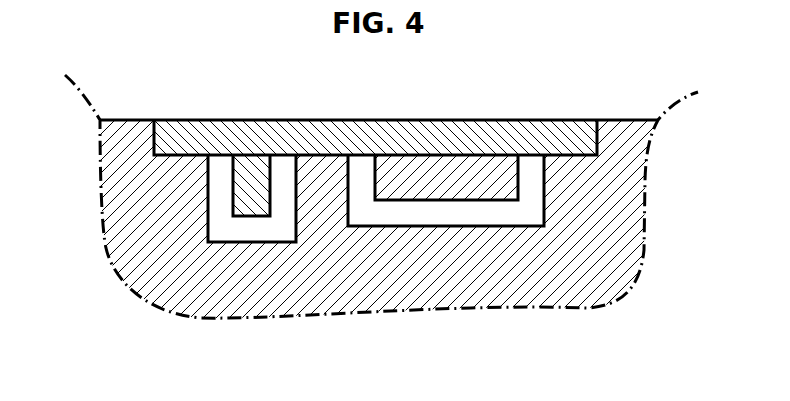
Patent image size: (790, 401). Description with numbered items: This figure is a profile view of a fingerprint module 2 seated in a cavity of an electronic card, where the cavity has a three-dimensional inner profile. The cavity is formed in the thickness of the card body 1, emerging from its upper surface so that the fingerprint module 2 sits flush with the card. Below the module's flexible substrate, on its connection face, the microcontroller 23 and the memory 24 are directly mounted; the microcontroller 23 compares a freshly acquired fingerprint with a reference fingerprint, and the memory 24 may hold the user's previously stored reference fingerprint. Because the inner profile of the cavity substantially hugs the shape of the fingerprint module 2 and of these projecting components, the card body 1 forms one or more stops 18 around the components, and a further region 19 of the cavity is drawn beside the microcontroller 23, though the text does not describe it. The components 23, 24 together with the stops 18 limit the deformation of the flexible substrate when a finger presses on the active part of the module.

The card body 1 is at (384, 291).
The fingerprint module 2 is at (397, 95).
The stop 18 is at (323, 197).
The trench 19 is at (532, 170).
The microcontroller 23 is at (447, 178).
The memory 24 is at (253, 185).